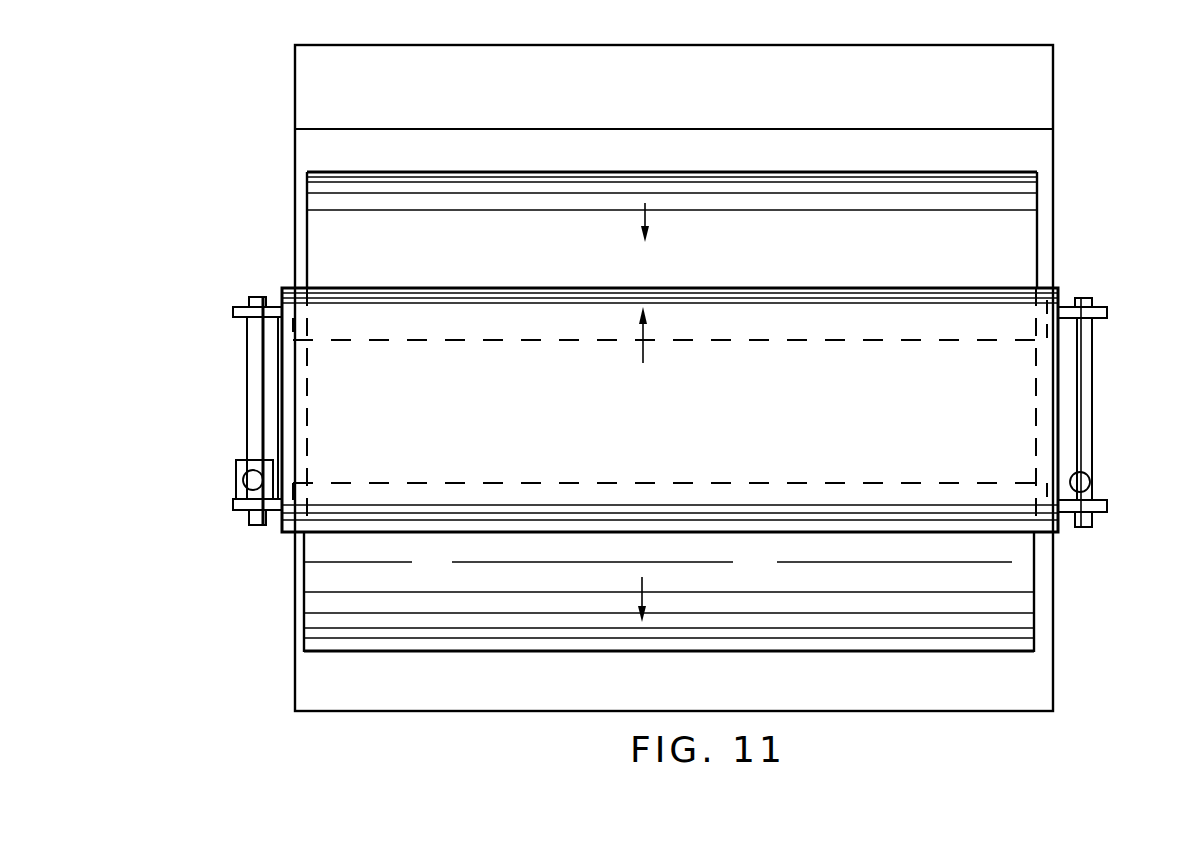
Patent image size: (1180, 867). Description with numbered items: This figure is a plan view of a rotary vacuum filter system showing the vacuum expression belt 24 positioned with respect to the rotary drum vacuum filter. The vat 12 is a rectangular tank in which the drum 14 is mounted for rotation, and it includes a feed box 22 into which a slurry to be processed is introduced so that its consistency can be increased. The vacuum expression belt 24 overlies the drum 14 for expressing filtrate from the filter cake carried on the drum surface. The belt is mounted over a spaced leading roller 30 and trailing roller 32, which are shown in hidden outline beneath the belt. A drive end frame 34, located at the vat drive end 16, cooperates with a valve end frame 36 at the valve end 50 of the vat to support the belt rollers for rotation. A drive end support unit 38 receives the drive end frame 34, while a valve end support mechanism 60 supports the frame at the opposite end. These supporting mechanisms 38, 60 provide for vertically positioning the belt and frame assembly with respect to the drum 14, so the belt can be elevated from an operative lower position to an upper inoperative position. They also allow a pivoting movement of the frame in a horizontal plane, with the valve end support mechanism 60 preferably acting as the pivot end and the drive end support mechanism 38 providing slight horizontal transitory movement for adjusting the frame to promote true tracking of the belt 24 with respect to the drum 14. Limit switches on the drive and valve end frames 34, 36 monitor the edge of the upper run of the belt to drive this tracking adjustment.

The vat 12 is at (1045, 630).
The drum 14 is at (1025, 202).
The vat drive end 16 is at (212, 411).
The feed box 22 is at (870, 125).
The vacuum expression belt 24 is at (898, 407).
The leading roller 30 is at (873, 342).
The trailing roller 32 is at (913, 483).
The drive end frame 34 is at (257, 432).
The valve end frame 36 is at (1087, 415).
The drive end support unit 38 is at (242, 470).
The valve end 50 is at (1112, 382).
The valve end support mechanism 60 is at (1092, 483).